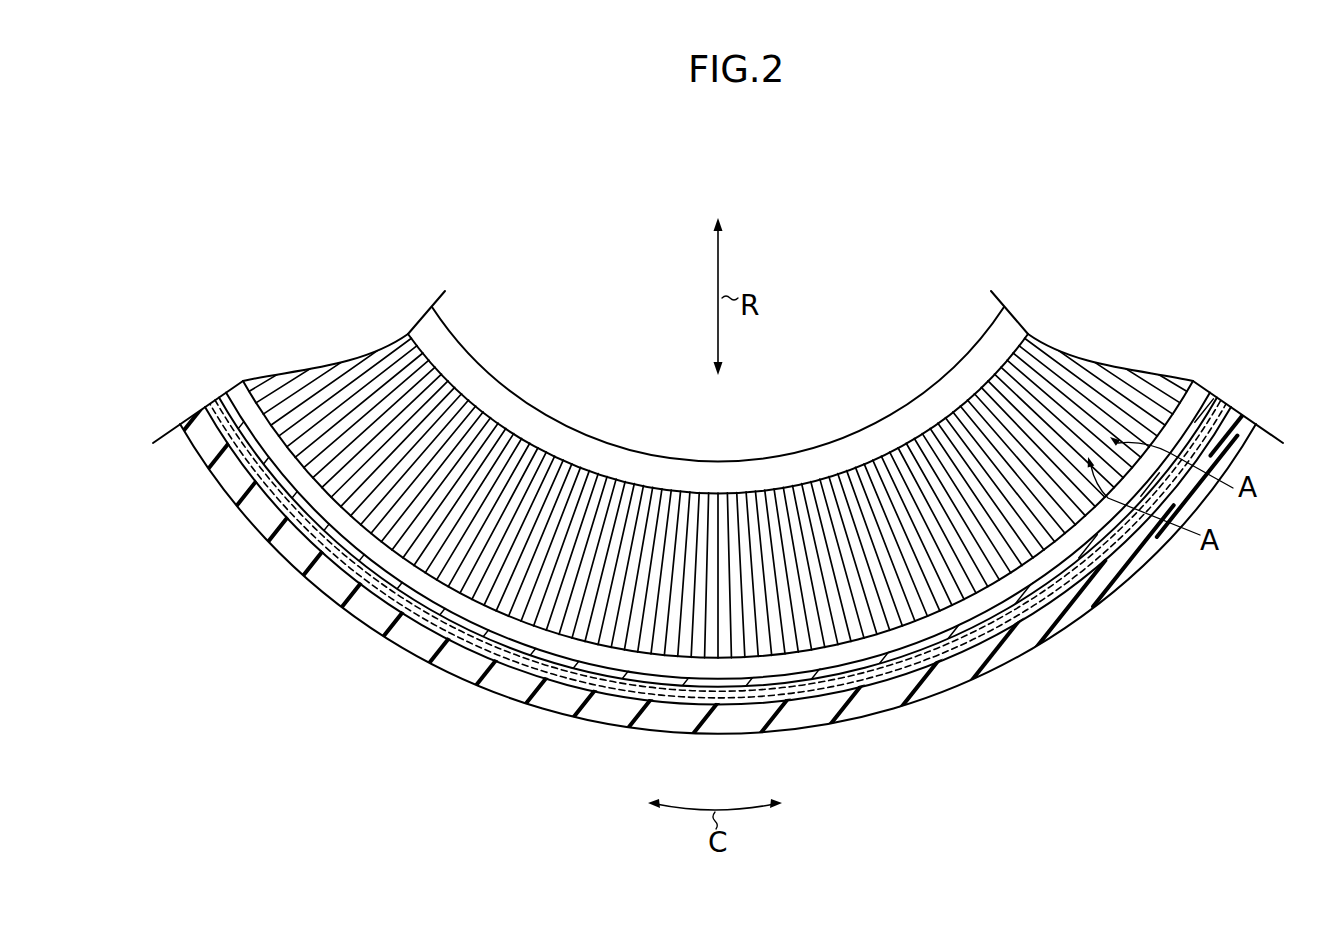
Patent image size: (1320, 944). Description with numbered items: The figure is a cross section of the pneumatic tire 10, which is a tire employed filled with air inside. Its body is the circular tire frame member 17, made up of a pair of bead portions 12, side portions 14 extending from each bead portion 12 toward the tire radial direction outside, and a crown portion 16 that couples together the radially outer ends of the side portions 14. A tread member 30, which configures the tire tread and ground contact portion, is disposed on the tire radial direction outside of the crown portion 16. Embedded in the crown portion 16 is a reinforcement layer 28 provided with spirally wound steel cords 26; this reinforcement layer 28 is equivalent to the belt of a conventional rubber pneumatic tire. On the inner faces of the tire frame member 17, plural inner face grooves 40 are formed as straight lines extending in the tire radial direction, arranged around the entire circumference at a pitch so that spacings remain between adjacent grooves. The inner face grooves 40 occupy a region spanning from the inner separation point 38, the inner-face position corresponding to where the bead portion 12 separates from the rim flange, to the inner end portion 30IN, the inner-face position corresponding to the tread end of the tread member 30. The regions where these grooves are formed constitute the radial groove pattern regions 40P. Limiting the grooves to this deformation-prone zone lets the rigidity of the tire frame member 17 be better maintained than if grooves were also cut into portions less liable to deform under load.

The pneumatic tire 10 is at (1188, 148).
The bead portion 12 is at (1050, 347).
The side portion 14 is at (1163, 373).
The crown portion 16 is at (1140, 572).
The tire frame member 17 is at (1209, 375).
The steel cords 26 is at (1103, 627).
The reinforcement layer 28 is at (1016, 643).
The tread member 30 is at (978, 692).
The inner end portion 30IN is at (1032, 322).
The inner separation point 38 is at (1193, 366).
The inner face grooves 40 is at (1095, 383).
The radial groove pattern region 40P is at (526, 632).